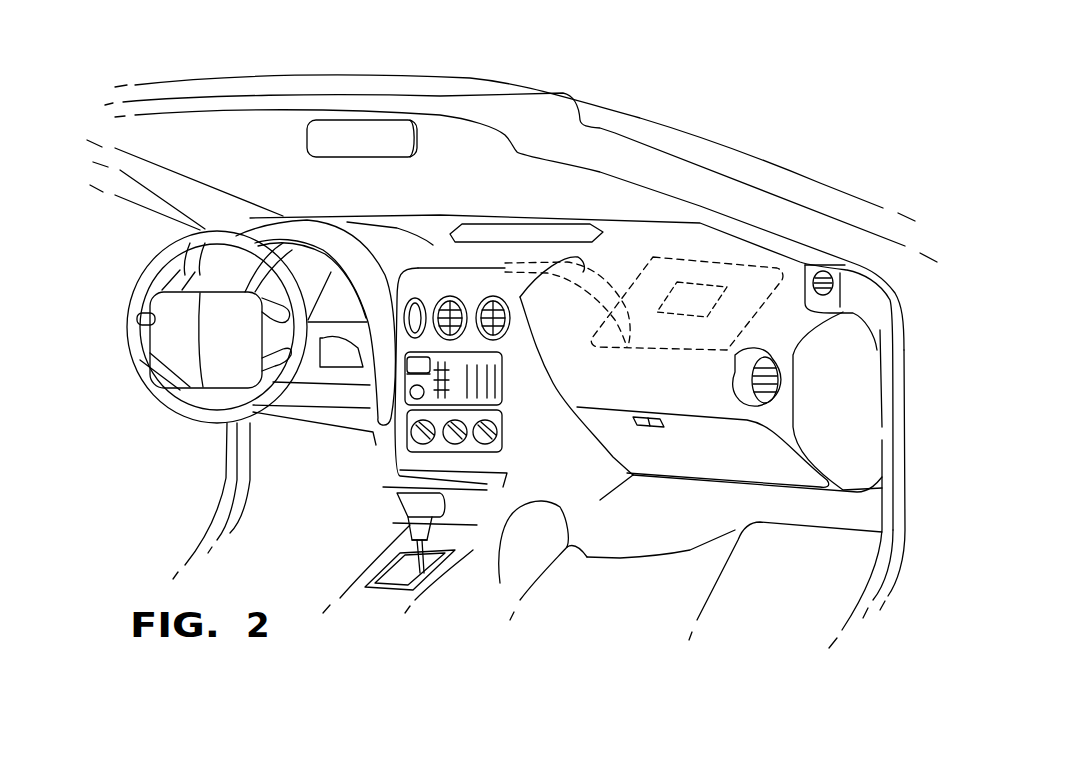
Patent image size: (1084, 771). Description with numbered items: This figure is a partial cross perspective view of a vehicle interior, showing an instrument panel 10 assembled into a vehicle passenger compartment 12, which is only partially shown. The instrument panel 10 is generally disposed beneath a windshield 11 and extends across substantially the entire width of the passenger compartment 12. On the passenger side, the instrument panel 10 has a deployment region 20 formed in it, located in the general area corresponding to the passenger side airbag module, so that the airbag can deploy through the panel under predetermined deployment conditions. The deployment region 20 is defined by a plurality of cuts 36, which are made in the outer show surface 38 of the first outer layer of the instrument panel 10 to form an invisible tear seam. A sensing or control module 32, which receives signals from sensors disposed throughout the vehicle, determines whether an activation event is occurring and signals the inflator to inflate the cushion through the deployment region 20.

The instrument panel 10 is at (570, 344).
The windshield 11 is at (455, 135).
The vehicle passenger compartment 12 is at (157, 478).
The deployment region 20 is at (756, 262).
The control module 32 is at (711, 268).
The cuts 36 is at (554, 301).
The outer show surface 38 is at (597, 253).